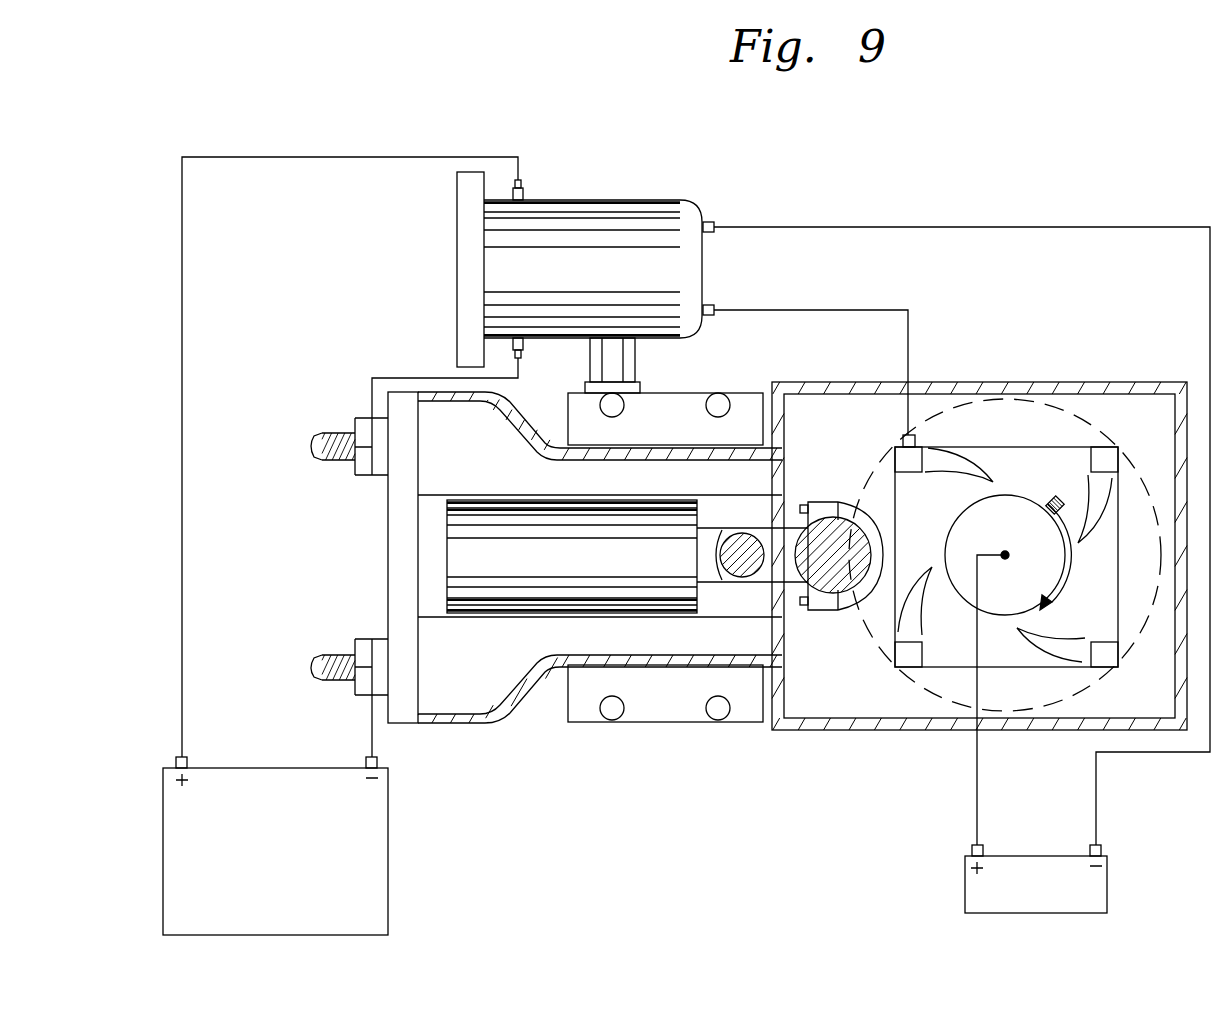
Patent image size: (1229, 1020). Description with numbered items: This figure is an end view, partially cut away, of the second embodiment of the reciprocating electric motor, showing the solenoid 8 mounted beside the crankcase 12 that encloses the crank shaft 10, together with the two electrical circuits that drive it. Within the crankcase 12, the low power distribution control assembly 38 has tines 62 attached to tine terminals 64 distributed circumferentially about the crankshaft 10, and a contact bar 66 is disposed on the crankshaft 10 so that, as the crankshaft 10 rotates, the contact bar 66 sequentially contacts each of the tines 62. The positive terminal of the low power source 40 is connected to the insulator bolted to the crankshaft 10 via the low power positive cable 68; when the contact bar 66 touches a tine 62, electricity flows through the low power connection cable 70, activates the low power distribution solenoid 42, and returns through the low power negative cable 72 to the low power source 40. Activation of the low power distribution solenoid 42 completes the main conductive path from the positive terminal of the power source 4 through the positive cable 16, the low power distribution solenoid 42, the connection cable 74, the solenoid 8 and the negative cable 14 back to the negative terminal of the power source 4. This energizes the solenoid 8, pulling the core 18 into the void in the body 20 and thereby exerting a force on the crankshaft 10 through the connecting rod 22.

The power source 4 is at (360, 858).
The solenoid 8 is at (386, 557).
The crank shaft 10 is at (1065, 578).
The crankcase 12 is at (847, 735).
The negative cable 14 is at (372, 722).
The positive cable 16 is at (182, 440).
The core 18 is at (580, 567).
The body 20 is at (472, 682).
The connecting rod 22 is at (808, 600).
The low power distribution control assembly 38 is at (927, 732).
The low power source 40 is at (1095, 885).
The low power distribution solenoid 42 is at (680, 207).
The tines 62 is at (948, 462).
The tine terminals 64 is at (915, 447).
The contact bar 66 is at (1053, 497).
The low power positive cable 68 is at (977, 797).
The low power connection cable 70 is at (910, 338).
The low power negative cable 72 is at (1096, 797).
The connection cable 74 is at (406, 380).